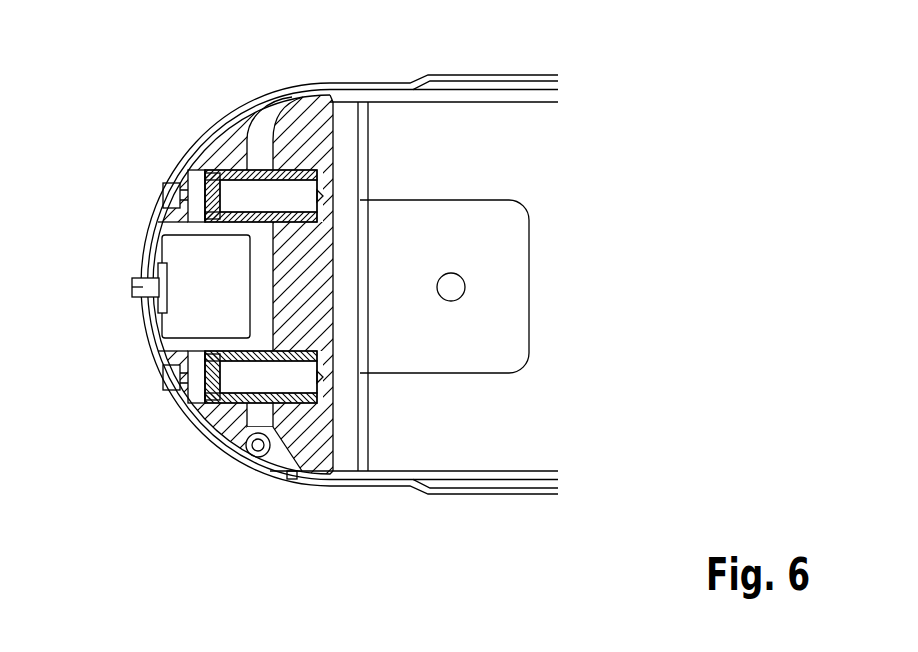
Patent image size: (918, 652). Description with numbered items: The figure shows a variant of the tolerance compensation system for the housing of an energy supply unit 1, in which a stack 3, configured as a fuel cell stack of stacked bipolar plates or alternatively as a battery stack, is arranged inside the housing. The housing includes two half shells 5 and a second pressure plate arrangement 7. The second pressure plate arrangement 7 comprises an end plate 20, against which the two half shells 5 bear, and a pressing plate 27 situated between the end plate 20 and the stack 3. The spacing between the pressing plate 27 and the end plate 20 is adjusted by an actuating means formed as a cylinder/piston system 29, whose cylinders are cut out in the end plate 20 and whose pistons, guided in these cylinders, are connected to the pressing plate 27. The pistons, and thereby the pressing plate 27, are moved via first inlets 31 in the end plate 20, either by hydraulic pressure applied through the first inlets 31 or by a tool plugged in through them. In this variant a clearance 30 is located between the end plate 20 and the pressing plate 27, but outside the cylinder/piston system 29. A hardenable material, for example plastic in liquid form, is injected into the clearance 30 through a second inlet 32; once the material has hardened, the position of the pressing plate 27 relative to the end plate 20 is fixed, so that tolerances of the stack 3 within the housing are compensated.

The energy supply unit 1 is at (648, 110).
The stack 3 is at (545, 178).
The half shells 5 is at (556, 75).
The second pressure plate arrangement 7 is at (404, 135).
The end plate 20 is at (226, 138).
The pressing plate 27 is at (312, 132).
The cylinder/piston system 29 is at (215, 143).
The clearance 30 is at (197, 310).
The first inlets 31 is at (163, 195).
The second inlet 32 is at (140, 285).